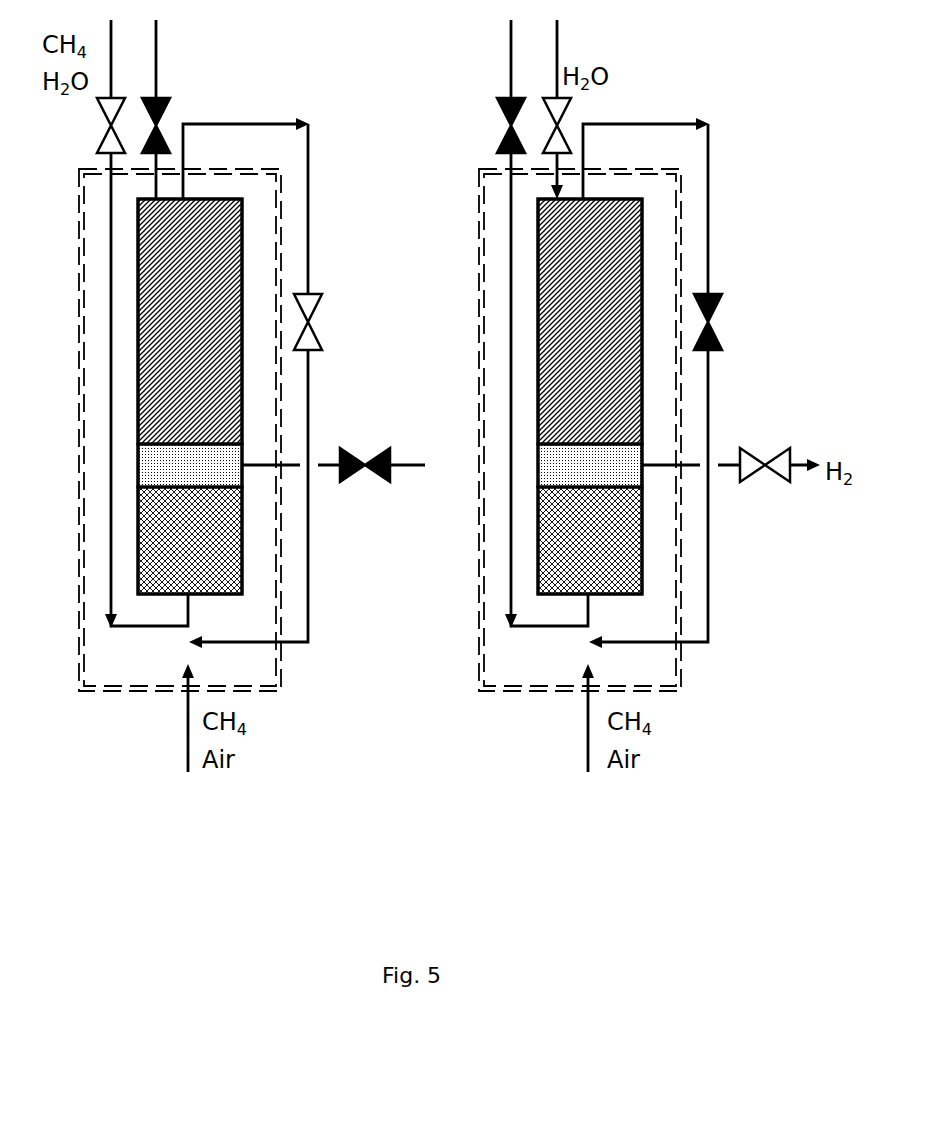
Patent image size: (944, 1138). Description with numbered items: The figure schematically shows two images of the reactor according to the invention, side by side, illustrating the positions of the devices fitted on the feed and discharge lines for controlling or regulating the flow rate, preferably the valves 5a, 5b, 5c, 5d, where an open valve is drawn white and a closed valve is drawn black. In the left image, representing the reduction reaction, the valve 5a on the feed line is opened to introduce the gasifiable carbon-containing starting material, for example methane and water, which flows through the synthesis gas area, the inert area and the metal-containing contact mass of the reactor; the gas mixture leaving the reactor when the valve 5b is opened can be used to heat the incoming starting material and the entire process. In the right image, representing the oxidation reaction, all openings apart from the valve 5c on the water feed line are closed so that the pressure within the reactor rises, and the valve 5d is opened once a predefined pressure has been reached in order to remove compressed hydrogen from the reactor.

The valve on the feed line for starting material 5a is at (292, 125).
The valve on the discharge line 5b is at (532, 322).
The valve on the feed line for water 5c is at (356, 109).
The hydrogen removal valve 5d is at (565, 443).